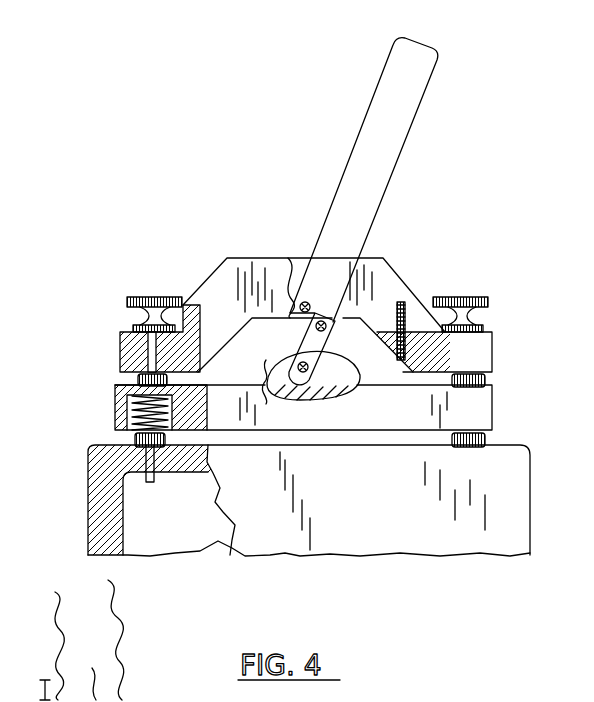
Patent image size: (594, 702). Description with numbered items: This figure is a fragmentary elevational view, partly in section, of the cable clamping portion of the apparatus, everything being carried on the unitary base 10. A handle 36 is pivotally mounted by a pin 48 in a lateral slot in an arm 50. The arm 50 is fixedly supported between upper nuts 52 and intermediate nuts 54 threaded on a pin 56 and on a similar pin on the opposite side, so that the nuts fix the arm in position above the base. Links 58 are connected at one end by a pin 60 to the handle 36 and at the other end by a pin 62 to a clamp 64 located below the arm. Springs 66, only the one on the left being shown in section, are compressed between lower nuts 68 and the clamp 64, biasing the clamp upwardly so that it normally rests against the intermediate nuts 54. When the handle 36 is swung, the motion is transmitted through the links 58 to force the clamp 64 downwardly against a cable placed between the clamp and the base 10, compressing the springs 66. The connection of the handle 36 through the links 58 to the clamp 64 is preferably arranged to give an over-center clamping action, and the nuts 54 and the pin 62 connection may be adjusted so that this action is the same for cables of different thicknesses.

The base 10 is at (283, 560).
The handle 36 is at (392, 139).
The pin 48 is at (307, 302).
The arm 50 is at (247, 268).
The upper nuts 52 is at (143, 297).
The intermediate nuts 54 is at (137, 380).
The pin 56 is at (120, 338).
The links 58 is at (353, 383).
The pin 60 is at (314, 329).
The pin 62 is at (267, 398).
The clamp 64 is at (478, 410).
The springs 66 is at (118, 422).
The lower nuts 68 is at (135, 437).